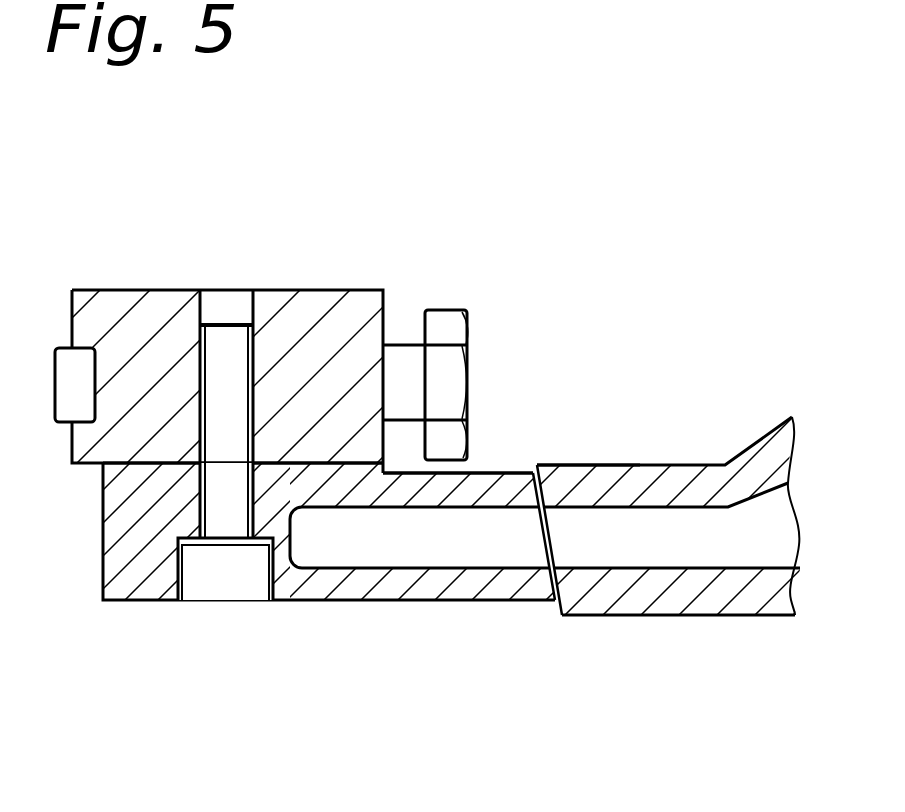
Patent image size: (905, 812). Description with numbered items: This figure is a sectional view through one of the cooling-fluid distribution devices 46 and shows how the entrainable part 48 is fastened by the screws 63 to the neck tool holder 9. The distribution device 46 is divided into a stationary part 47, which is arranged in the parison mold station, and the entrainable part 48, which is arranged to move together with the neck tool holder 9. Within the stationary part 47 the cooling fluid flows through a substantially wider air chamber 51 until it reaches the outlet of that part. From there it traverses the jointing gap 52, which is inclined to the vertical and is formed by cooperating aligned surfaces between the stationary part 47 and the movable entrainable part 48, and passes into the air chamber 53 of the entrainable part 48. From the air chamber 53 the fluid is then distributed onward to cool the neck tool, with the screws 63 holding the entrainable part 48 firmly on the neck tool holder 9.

The neck tool holder 9 is at (362, 291).
The distribution device 46 is at (608, 442).
The stationary part 47 is at (685, 617).
The entrainable part 48 is at (103, 601).
The air chamber 51 is at (779, 535).
The jointing gap 52 is at (563, 605).
The air chamber 53 is at (436, 548).
The screws 63 is at (213, 585).